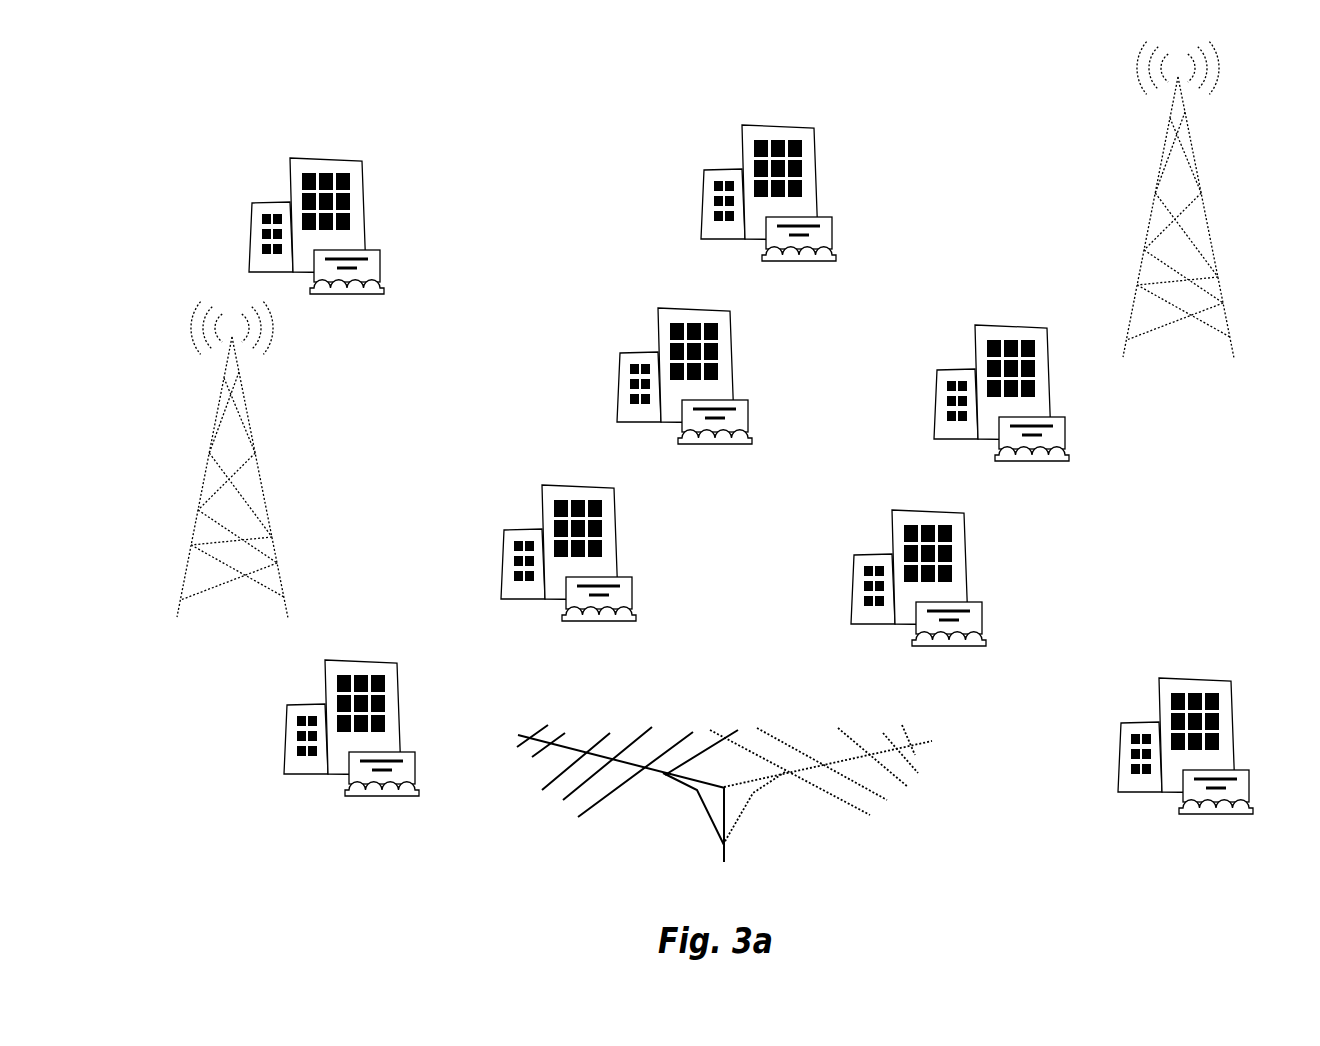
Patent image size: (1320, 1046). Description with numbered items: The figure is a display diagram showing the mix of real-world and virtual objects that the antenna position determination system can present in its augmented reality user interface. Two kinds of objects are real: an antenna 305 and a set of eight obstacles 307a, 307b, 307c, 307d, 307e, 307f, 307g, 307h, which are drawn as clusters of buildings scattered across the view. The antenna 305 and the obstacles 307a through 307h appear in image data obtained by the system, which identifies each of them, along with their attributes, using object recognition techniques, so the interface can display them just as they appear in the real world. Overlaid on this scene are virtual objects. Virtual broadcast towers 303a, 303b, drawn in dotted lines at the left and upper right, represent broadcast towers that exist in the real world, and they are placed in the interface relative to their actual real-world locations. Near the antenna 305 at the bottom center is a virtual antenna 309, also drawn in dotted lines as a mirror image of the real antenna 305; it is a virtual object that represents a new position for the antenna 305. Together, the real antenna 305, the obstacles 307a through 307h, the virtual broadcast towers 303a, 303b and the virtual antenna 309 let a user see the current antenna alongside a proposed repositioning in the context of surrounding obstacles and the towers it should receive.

The virtual broadcast tower 303a is at (257, 460).
The virtual broadcast tower 303b is at (1210, 227).
The antenna 305 is at (607, 730).
The obstacle 307a is at (366, 212).
The obstacle 307b is at (816, 177).
The obstacle 307c is at (727, 360).
The obstacle 307d is at (1062, 443).
The obstacle 307e is at (617, 545).
The obstacle 307f is at (960, 577).
The obstacle 307g is at (400, 728).
The obstacle 307h is at (1227, 745).
The virtual antenna 309 is at (800, 728).